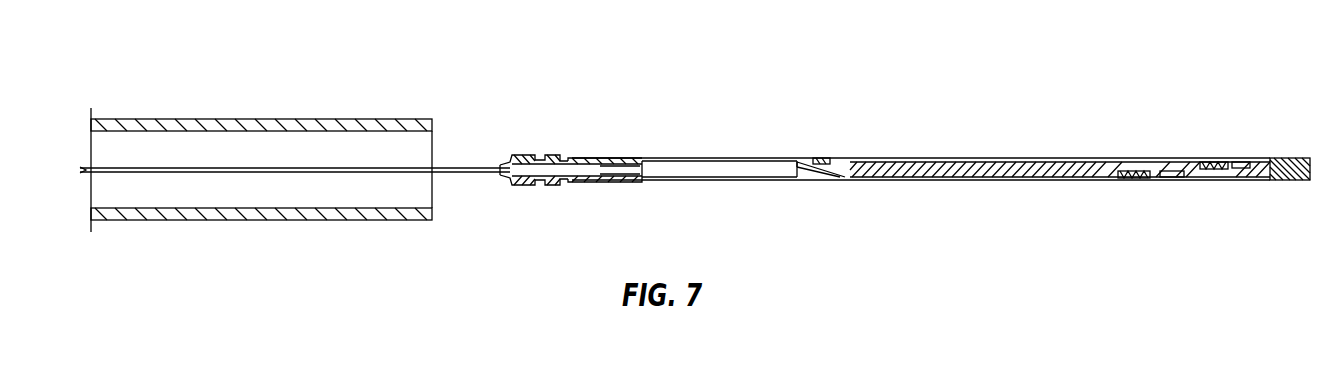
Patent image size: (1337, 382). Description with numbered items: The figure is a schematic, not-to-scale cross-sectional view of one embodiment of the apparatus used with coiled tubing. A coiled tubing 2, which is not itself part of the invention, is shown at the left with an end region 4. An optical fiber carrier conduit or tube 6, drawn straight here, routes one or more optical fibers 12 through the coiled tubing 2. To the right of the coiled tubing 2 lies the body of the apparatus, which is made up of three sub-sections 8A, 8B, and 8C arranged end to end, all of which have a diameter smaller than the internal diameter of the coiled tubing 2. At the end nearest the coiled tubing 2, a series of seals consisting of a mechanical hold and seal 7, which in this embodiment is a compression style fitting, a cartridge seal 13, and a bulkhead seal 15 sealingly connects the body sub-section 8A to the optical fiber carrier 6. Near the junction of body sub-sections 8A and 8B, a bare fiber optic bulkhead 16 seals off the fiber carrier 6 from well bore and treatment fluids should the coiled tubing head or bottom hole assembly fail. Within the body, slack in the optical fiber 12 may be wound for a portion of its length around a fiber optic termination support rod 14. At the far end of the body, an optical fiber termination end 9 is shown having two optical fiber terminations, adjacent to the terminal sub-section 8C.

The coiled tubing 2 is at (182, 118).
The end region 4 is at (433, 203).
The optical fiber carrier conduit 6 is at (447, 165).
The mechanical hold and seal 7 is at (513, 157).
The cartridge seal 13 is at (563, 155).
The bulkhead seal 15 is at (603, 155).
The body sub-section 8A is at (657, 157).
The optical fiber 12 is at (815, 165).
The bare fiber optic bulkhead 16 is at (828, 165).
The body sub-section 8B is at (960, 160).
The fiber optic termination support rod 14 is at (980, 168).
The optical fiber termination end 9 is at (1210, 160).
The body sub-section 8C is at (1282, 165).